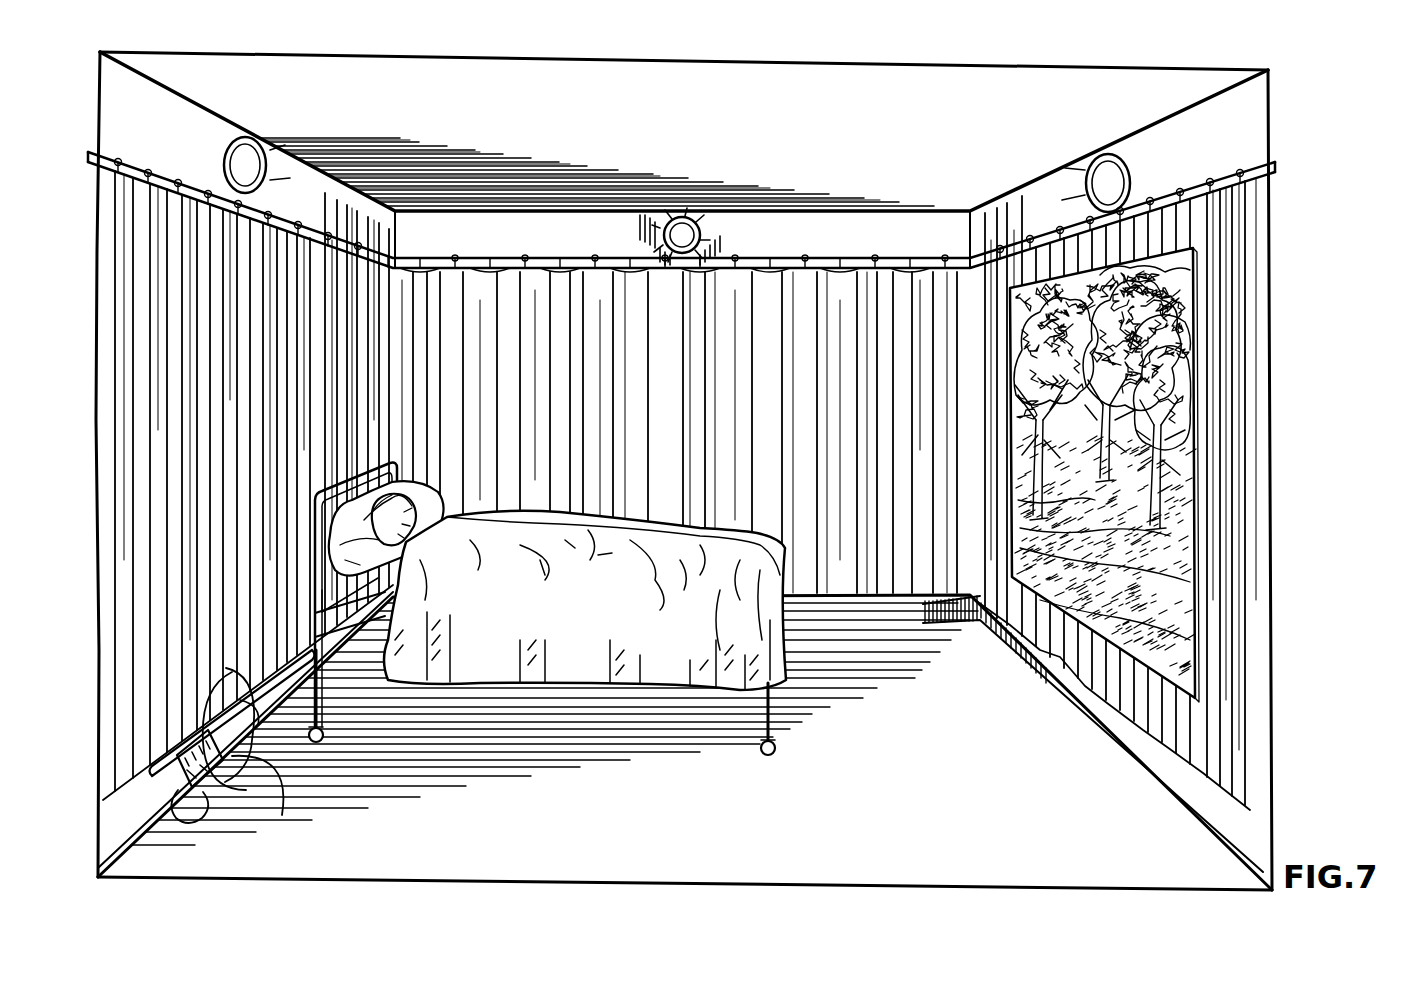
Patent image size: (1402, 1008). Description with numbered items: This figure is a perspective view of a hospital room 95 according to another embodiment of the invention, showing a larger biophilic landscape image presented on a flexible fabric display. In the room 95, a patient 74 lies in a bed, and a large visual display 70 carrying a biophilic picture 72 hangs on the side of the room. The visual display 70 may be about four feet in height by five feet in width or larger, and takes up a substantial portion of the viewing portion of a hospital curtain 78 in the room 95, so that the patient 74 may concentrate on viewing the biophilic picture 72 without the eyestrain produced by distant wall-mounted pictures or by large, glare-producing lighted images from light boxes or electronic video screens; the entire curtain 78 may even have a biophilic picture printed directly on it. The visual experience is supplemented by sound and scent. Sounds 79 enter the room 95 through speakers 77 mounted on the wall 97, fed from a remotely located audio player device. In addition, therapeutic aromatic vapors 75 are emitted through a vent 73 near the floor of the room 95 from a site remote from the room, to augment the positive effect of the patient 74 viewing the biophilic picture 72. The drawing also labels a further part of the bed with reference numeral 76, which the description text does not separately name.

The room 95 is at (742, 100).
The wall 97 is at (330, 190).
The speaker 77 is at (232, 150).
The sounds 79 is at (279, 158).
The visual display 70 is at (1163, 475).
The biophilic picture 72 is at (1167, 597).
The hospital curtain 78 is at (1230, 390).
The patient 74 is at (547, 625).
The bed caster 76 is at (752, 724).
The vent 73 is at (183, 800).
The aromatic vapors 75 is at (277, 773).